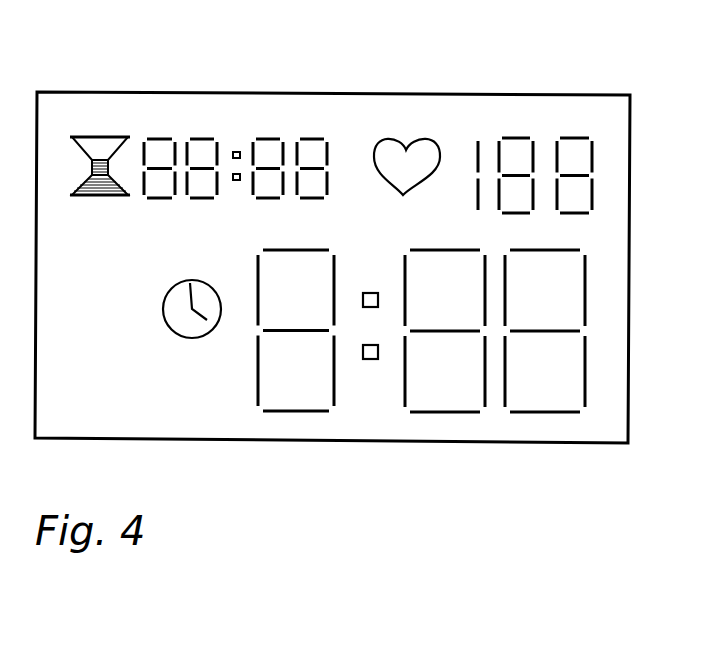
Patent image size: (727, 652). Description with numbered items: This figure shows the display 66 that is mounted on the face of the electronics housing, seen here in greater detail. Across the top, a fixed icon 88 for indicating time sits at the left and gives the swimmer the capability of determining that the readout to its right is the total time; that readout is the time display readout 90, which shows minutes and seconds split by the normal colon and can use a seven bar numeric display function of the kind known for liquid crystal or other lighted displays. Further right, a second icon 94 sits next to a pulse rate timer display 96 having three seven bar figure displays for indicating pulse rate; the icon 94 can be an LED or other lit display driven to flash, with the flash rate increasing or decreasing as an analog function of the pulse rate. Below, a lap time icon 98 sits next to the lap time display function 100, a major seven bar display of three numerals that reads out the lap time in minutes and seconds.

The display 66 is at (468, 458).
The fixed icon 88 is at (103, 136).
The time display readout 90 is at (241, 118).
The second icon 94 is at (430, 137).
The pulse rate timer display 96 is at (558, 120).
The lap time icon 98 is at (205, 336).
The lap time display function 100 is at (381, 410).